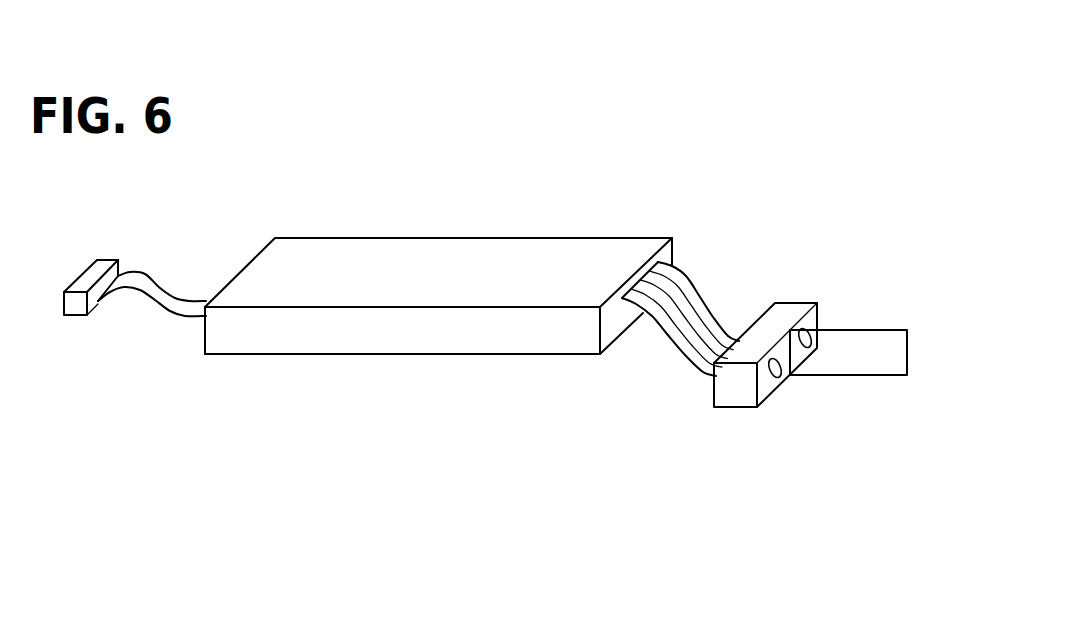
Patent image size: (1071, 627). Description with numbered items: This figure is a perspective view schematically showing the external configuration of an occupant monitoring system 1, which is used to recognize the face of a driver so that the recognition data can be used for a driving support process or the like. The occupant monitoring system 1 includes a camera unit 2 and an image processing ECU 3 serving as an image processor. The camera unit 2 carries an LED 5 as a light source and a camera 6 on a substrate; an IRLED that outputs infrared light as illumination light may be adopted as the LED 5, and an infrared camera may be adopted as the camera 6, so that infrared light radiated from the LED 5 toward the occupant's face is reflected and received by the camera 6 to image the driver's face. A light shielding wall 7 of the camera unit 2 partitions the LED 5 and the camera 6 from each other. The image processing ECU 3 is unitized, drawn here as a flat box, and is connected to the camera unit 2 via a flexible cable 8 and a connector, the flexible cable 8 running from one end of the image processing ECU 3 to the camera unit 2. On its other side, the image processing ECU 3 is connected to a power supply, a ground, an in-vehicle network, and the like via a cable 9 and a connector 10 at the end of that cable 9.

The occupant monitoring system 1 is at (542, 222).
The camera unit 2 is at (730, 412).
The image processing ECU 3 is at (402, 357).
The LED 5 is at (778, 377).
The camera 6 is at (818, 331).
The light shielding wall 7 is at (890, 337).
The flexible cable 8 is at (700, 302).
The cable 9 is at (180, 301).
The connector 10 is at (107, 261).